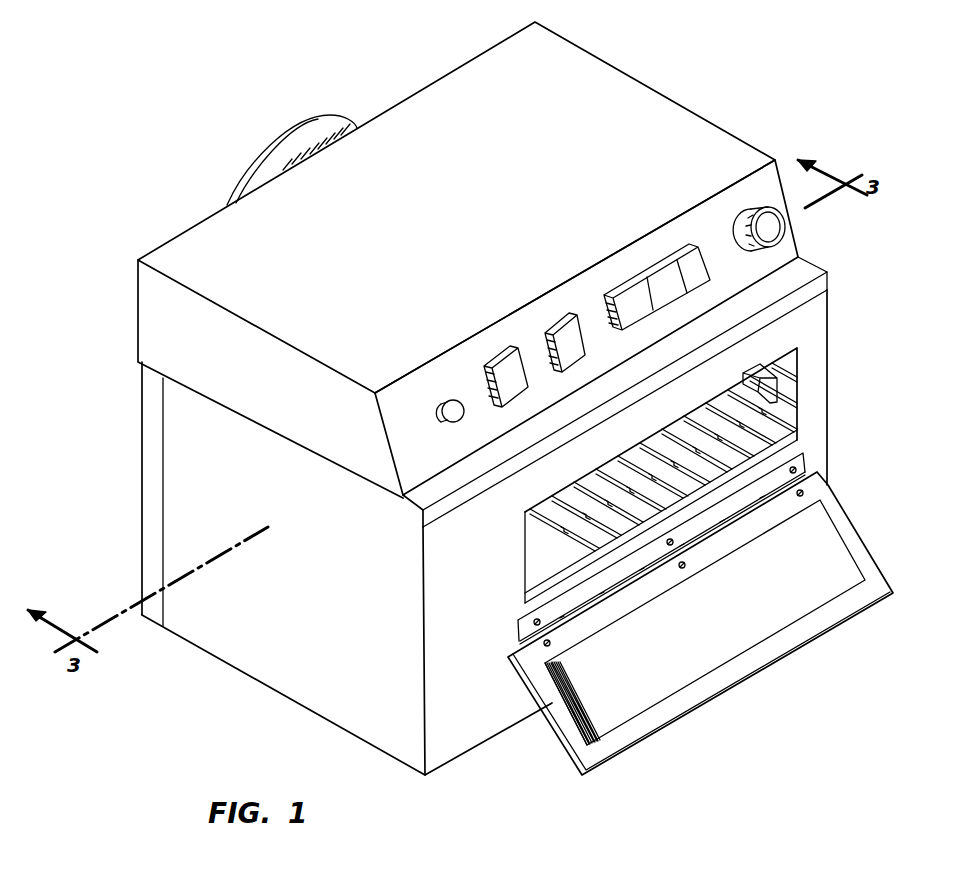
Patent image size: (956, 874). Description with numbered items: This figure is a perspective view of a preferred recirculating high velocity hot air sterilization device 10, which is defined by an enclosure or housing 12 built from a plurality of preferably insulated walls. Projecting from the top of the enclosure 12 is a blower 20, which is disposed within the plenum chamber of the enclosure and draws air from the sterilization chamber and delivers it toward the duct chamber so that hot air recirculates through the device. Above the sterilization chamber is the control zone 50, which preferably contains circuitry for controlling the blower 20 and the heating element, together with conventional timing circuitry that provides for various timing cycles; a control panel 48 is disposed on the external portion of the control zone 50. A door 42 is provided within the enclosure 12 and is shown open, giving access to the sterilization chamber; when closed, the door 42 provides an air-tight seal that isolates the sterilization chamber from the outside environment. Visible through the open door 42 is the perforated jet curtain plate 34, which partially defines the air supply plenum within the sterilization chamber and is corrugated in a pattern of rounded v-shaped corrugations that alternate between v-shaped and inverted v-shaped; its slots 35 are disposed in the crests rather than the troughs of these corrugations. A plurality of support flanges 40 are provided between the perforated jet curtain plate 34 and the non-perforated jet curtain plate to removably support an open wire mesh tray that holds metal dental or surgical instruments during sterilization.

The recirculating high velocity hot air sterilization device 10 is at (287, 708).
The enclosure 12 is at (485, 745).
The blower 20 is at (252, 157).
The perforated jet curtain plate 34 is at (760, 436).
The slots 35 is at (723, 422).
The support flanges 40 is at (767, 378).
The door 42 is at (683, 717).
The control panel 48 is at (797, 232).
The control zone 50 is at (153, 327).